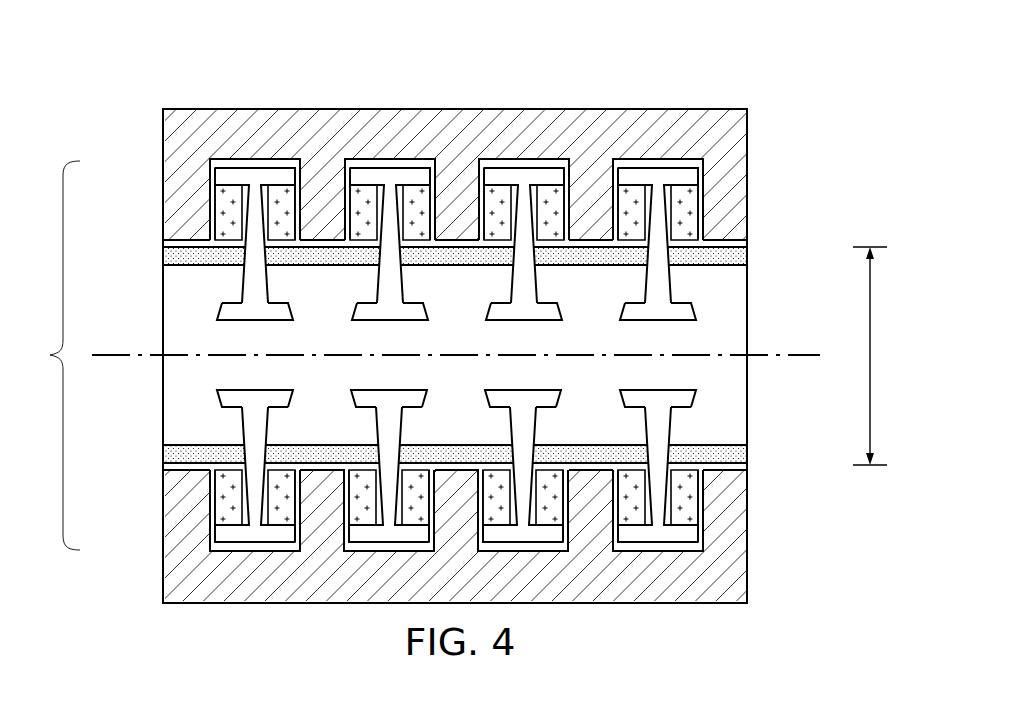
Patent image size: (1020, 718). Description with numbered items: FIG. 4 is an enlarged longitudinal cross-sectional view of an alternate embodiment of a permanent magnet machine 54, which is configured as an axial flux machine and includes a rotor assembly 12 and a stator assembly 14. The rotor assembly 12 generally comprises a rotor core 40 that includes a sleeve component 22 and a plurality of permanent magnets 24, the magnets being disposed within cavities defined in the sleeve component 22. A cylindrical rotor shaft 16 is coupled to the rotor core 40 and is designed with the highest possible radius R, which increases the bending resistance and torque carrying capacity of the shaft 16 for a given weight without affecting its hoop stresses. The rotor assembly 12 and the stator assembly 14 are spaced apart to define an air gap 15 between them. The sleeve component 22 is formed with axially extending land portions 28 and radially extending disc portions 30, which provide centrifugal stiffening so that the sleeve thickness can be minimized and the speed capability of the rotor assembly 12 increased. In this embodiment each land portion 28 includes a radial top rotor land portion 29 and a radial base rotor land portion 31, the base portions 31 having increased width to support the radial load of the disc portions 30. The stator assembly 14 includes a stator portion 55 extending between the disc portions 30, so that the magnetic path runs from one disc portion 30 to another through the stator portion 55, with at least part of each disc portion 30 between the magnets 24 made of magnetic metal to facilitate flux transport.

The rotor assembly 12 is at (768, 277).
The stator assembly 14 is at (735, 134).
The air gap 15 is at (237, 164).
The rotor shaft 16 is at (162, 252).
The sleeve component 22 is at (660, 168).
The permanent magnets 24 is at (487, 213).
The land portion 28 is at (407, 177).
The radial top rotor land portion 29 is at (278, 178).
The disc portion 30 is at (668, 213).
The radial base rotor land portion 31 is at (695, 308).
The rotor core 40 is at (50, 353).
The permanent magnet machine 54 is at (252, 52).
The stator portion 55 is at (315, 215).
The radius R is at (873, 356).